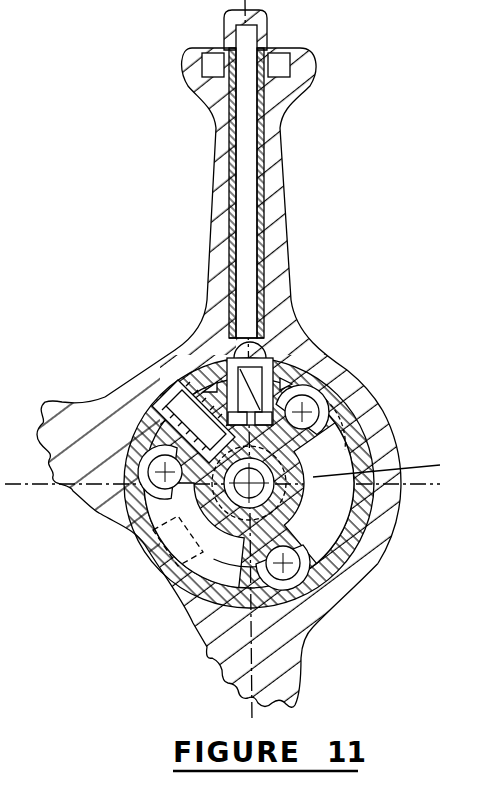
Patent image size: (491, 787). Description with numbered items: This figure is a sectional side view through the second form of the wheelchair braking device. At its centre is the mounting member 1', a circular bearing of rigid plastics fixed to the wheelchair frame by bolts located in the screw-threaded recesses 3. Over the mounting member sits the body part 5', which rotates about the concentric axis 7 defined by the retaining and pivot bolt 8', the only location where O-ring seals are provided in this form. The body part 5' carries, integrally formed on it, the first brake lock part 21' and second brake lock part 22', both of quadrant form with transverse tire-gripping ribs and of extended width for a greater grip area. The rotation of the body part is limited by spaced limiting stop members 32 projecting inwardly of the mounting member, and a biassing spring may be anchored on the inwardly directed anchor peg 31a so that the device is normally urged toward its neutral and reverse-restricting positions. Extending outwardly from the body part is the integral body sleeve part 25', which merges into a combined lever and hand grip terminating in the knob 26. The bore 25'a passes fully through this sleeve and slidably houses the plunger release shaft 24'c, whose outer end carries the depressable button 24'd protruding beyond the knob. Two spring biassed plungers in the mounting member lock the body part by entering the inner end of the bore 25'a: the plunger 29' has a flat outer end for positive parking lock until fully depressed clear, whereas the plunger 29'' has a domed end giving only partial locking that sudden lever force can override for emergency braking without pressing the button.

The depressable button 24'd is at (303, 29).
The hand grip knob 26 is at (312, 72).
The plunger release shaft 24'c is at (193, 181).
The body sleeve part 25' is at (243, 269).
The bore 25'a is at (295, 359).
The plunger 29' is at (141, 382).
The plunger 29'' is at (358, 389).
The first brake lock part 21' is at (83, 447).
The body part 5' is at (398, 466).
The screw-threaded recesses 3 is at (319, 413).
The anchor peg 31a is at (400, 505).
The limiting stop members 32 is at (142, 552).
The concentric axis 7 is at (278, 496).
The mounting member 1' is at (214, 501).
The retaining and pivot bolt 8' is at (182, 584).
The second brake lock part 22' is at (276, 626).